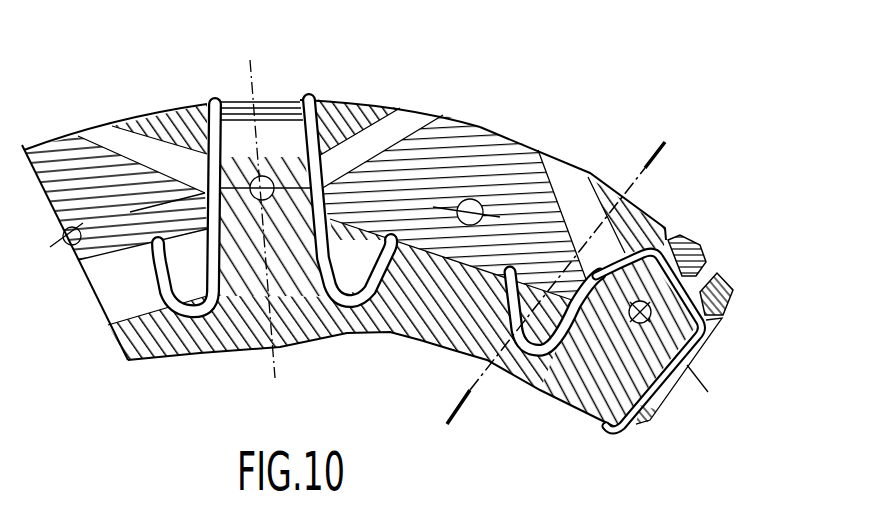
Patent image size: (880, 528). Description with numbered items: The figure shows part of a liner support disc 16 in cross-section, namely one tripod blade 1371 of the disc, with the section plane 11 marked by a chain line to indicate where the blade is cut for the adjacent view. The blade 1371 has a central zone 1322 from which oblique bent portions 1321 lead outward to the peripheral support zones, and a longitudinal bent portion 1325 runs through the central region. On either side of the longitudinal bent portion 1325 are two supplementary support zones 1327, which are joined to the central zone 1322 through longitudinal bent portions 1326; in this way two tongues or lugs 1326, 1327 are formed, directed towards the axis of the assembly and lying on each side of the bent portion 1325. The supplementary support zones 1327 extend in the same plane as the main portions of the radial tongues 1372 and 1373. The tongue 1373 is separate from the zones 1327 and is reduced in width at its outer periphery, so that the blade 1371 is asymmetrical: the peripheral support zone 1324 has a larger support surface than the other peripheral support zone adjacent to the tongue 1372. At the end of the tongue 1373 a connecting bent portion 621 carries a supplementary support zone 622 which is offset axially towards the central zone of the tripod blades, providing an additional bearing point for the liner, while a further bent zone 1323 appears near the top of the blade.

The pole body 16 is at (190, 363).
The oblique bent portions 1321 is at (566, 158).
The central zone 1322 is at (413, 370).
The end plate region 1323 is at (347, 107).
The peripheral support zone 1324 is at (603, 190).
The longitudinal bent portion 1325 is at (460, 290).
The longitudinal bent portions 1326 is at (398, 332).
The supplementary support zones 1327 is at (343, 333).
The tripod blade 1371 is at (523, 132).
The radial tongue 1372 is at (268, 92).
The radial tongue 1373 is at (707, 245).
The connecting bent portion 621 is at (727, 313).
The supplementary support zone 622 is at (705, 258).
The section line XI-XI 11 is at (662, 162).